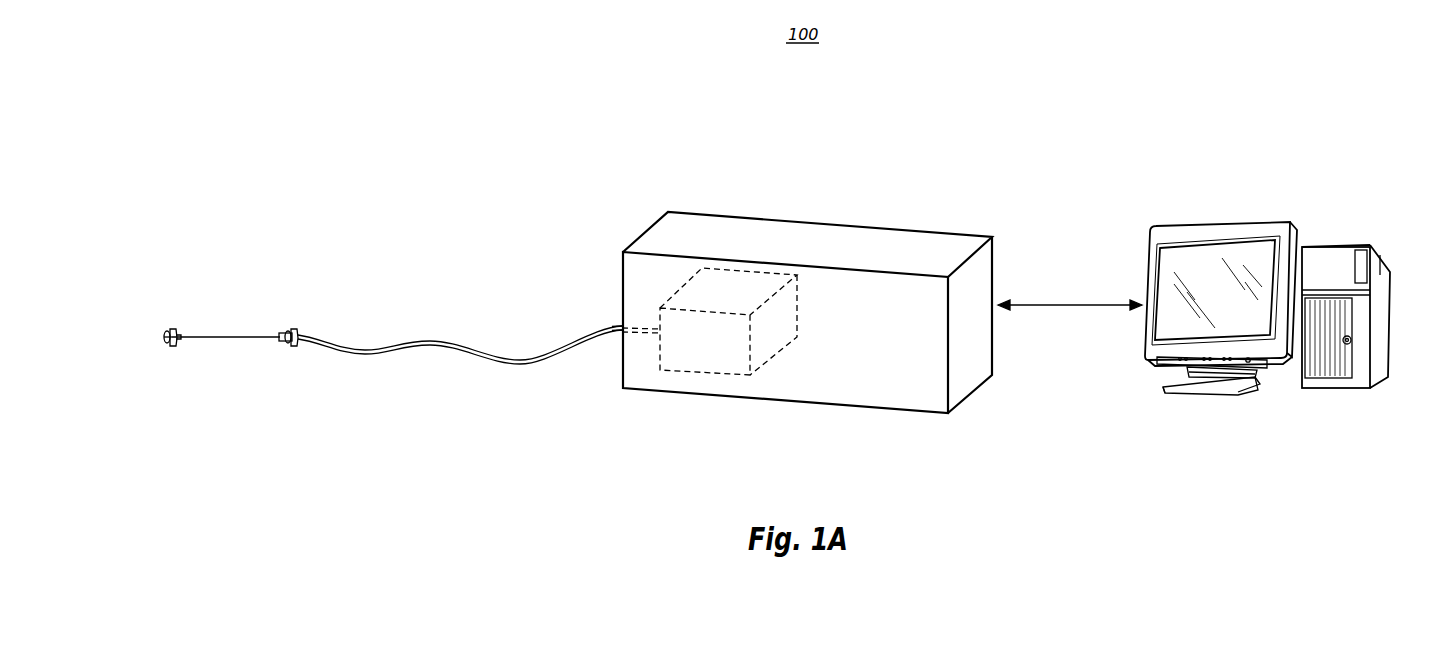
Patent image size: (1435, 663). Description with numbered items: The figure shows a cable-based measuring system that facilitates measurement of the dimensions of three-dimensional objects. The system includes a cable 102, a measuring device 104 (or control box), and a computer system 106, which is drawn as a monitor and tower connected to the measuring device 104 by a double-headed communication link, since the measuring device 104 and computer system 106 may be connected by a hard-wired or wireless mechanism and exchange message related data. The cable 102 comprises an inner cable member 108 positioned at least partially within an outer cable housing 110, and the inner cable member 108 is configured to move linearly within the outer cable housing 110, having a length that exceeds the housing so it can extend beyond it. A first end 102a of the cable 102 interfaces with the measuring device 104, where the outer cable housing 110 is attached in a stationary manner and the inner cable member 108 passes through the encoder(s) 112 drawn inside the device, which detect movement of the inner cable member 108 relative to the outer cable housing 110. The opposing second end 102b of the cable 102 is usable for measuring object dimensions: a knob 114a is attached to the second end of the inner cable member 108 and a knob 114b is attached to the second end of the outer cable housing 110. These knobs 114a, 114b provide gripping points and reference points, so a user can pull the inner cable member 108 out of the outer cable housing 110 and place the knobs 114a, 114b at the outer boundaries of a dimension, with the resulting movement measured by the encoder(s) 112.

The cable 102 is at (622, 217).
The first end of cable 102a is at (622, 327).
The second end of cable 102b is at (168, 341).
The measuring device 104 is at (752, 227).
The computer system 106 is at (1305, 240).
The inner cable member 108 is at (263, 338).
The outer cable housing 110 is at (483, 354).
The encoder(s) 112 is at (787, 322).
The knob 114a is at (178, 327).
The knob 114b is at (300, 327).